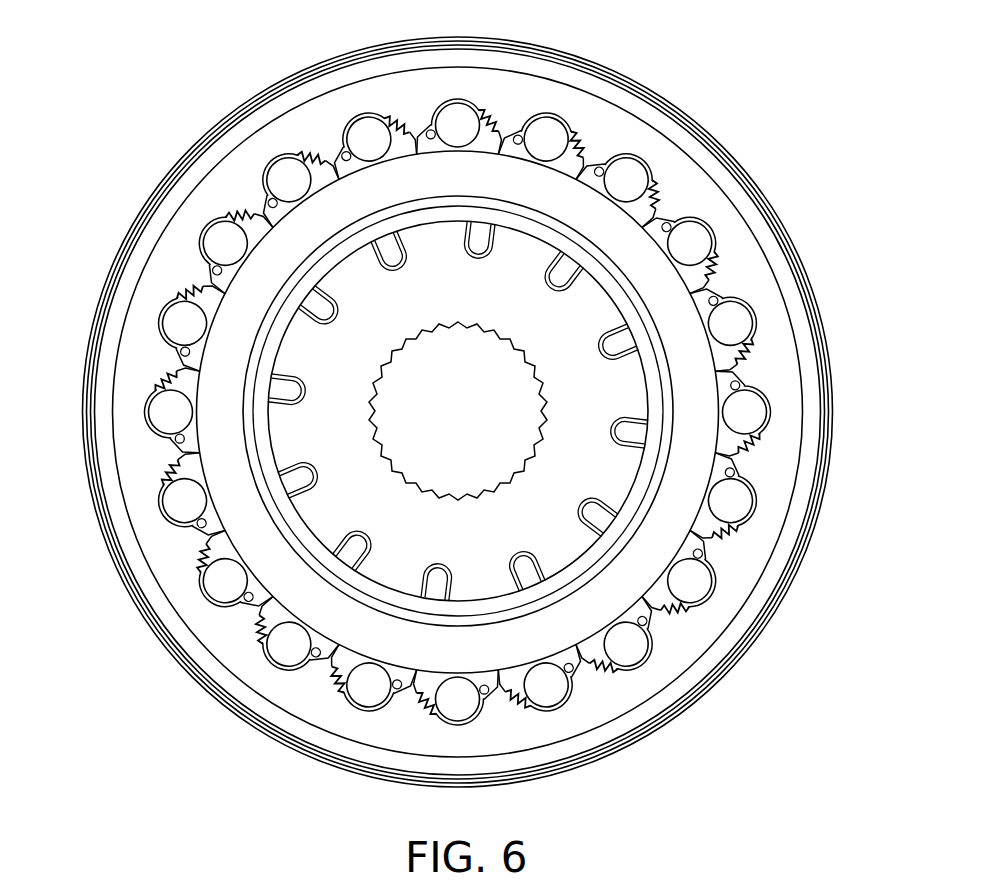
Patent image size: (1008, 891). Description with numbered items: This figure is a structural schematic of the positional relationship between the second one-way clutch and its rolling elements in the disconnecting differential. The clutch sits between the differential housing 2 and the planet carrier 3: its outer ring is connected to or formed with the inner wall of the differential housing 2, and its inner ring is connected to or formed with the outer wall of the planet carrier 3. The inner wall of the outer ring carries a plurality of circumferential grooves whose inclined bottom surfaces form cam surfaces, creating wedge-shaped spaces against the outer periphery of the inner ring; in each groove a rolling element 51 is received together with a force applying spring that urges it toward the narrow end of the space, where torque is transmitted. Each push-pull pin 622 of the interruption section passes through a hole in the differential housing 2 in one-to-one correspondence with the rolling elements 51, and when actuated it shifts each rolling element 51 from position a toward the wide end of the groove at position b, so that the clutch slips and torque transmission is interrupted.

The differential housing 2 is at (548, 80).
The planet carrier 3 is at (615, 257).
The rolling element 51 is at (233, 237).
The push-pull pin 622 is at (215, 270).
The locked position of rolling element a is at (203, 233).
The shifted position of rolling element b is at (210, 205).